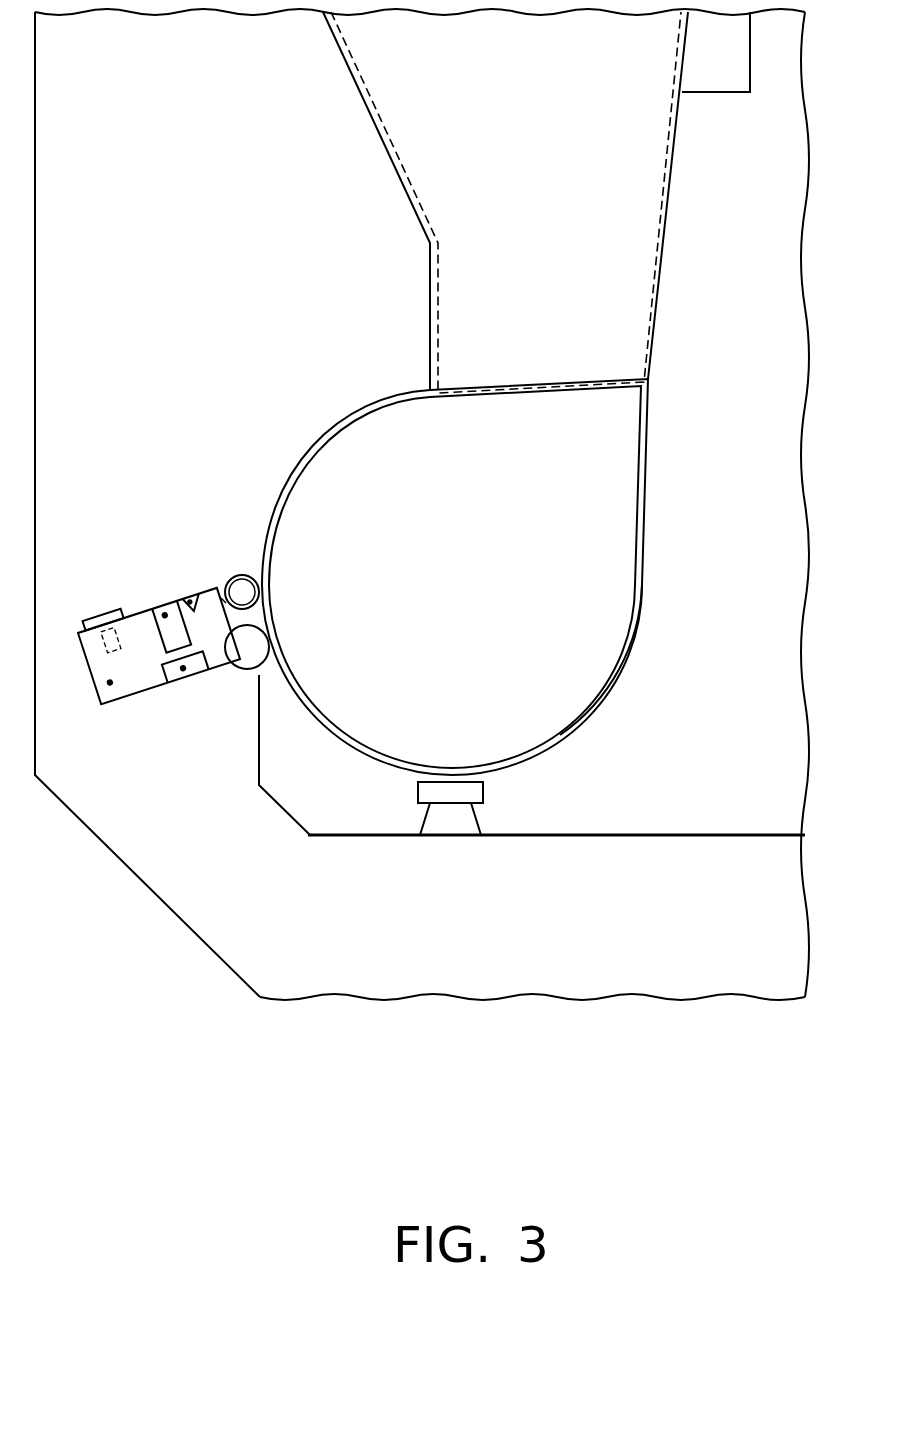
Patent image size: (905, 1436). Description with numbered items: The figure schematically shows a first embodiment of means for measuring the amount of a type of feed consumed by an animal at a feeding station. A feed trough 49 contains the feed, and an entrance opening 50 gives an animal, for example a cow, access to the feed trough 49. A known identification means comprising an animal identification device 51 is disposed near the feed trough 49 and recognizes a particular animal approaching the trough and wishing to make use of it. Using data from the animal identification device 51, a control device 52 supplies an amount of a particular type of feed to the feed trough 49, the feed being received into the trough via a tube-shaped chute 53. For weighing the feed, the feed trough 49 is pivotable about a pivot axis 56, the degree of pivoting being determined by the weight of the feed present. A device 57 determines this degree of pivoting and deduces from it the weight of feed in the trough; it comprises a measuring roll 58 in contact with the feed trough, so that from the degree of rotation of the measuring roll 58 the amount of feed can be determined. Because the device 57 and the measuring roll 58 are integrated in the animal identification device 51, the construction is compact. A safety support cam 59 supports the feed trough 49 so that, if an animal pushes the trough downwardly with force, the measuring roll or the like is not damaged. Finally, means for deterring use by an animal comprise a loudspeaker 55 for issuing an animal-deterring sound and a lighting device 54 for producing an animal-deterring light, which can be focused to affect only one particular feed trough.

The feed trough 49 is at (610, 678).
The entrance opening 50 is at (335, 433).
The animal identification device 51 is at (110, 683).
The control device 52 is at (718, 58).
The tube-shaped chute 53 is at (662, 257).
The lighting device 54 is at (165, 615).
The loudspeaker 55 is at (190, 602).
The pivot axis 56 is at (242, 592).
The device for determining the degree of pivoting 57 is at (183, 668).
The measuring roll 58 is at (263, 661).
The safety support cam 59 is at (462, 820).